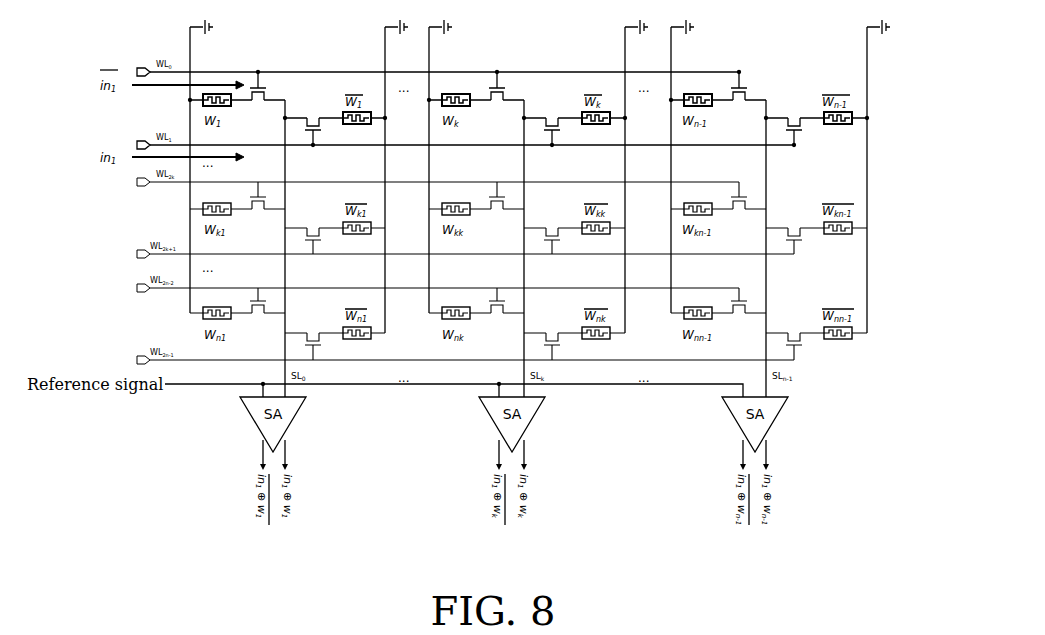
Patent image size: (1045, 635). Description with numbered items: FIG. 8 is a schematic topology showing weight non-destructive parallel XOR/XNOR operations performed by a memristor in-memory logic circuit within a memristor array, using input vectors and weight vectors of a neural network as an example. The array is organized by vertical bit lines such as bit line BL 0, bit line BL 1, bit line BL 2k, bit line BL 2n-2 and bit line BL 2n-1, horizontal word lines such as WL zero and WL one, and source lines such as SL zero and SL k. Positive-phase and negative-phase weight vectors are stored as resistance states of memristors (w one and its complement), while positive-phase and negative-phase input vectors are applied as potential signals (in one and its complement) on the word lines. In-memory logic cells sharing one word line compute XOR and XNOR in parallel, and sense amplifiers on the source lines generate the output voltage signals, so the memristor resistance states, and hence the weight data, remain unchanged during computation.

The bit line BL0 0 is at (201, 166).
The bit line BL1 1 is at (396, 176).
The bit line BL2k 2k is at (440, 166).
The bit line BL2n-2 2n-2 is at (685, 166).
The bit line BL2n-1 2n-1 is at (881, 176).